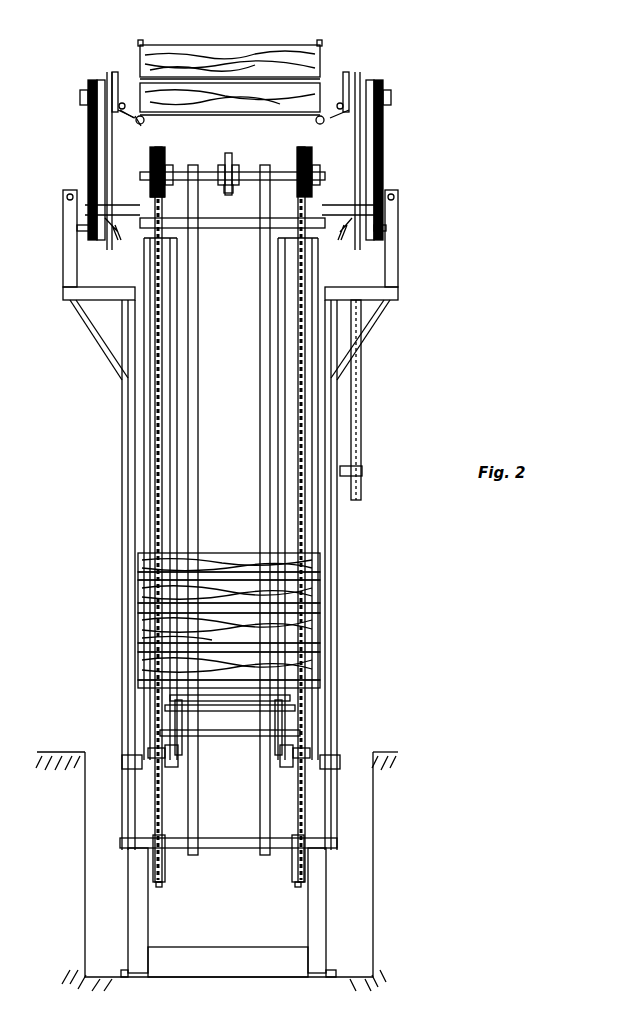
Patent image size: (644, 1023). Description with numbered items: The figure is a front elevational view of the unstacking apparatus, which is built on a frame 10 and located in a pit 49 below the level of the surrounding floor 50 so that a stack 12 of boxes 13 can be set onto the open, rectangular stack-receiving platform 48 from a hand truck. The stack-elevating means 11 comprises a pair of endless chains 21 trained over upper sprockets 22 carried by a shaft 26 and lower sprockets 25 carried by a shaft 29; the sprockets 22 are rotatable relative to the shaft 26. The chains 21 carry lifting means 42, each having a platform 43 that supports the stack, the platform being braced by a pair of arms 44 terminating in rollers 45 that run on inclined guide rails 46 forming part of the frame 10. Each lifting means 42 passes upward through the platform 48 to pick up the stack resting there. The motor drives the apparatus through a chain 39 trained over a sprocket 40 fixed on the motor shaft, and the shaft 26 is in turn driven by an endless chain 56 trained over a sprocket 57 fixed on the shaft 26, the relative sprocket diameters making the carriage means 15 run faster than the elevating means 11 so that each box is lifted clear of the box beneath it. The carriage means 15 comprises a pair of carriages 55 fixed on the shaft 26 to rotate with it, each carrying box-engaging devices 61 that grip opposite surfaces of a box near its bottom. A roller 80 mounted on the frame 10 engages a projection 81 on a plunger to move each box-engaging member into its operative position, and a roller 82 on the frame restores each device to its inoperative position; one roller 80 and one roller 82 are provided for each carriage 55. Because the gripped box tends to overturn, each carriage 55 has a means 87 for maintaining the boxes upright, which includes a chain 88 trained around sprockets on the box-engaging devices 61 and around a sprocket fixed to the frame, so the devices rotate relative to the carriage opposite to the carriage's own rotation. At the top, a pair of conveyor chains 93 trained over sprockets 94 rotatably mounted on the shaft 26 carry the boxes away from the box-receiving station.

The frame 10 is at (118, 452).
The stack-elevating means 11 is at (312, 722).
The stack 12 is at (150, 644).
The boxes 13 is at (258, 48).
The carriage means 15 is at (380, 132).
The endless chains 21 is at (156, 887).
The sprockets 22 is at (170, 170).
The sprockets 25 is at (228, 861).
The shaft 26 is at (248, 172).
The shaft 29 is at (228, 912).
The chain 39 is at (362, 430).
The sprocket 40 is at (362, 470).
The lifting means 42 is at (236, 756).
The platform 43 is at (228, 700).
The arms 44 is at (182, 736).
The rollers 45 is at (178, 766).
The inclined guide rails 46 is at (130, 503).
The stack-receiving platform 48 is at (130, 762).
The pit 49 is at (95, 760).
The floor 50 is at (52, 750).
The carriages 55 is at (88, 110).
The endless chain 56 is at (228, 152).
The sprocket 57 is at (226, 187).
The box-engaging devices 61 is at (118, 72).
The roller 80 is at (72, 196).
The projection 81 is at (78, 228).
The roller 82 is at (126, 102).
The means for maintaining the boxes upright 87 is at (86, 148).
The chain 88 is at (95, 130).
The chains 93 is at (166, 148).
The sprockets 94 is at (150, 128).